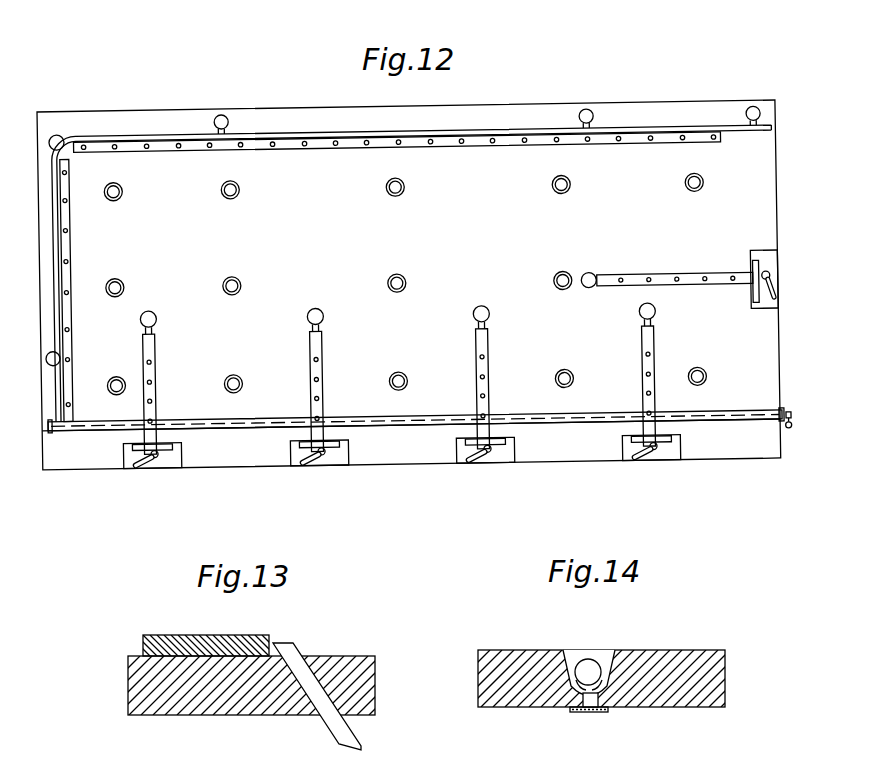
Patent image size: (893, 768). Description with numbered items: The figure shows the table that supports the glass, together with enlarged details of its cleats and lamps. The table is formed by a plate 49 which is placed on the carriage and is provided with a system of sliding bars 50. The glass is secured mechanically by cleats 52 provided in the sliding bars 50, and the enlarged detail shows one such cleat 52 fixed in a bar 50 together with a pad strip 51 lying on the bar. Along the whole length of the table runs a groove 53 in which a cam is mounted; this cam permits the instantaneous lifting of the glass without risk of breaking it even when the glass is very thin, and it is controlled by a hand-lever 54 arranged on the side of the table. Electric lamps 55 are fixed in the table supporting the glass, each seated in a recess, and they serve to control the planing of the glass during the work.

In FIG. 12, the plate 49 is at (83, 443).
In FIG. 12, the sliding bars 50 is at (308, 433).
In FIG. 13, the sliding bars 50 is at (203, 697).
In FIG. 13, the pad strip 51 is at (160, 638).
In FIG. 13, the cleats 52 is at (338, 723).
In FIG. 12, the groove 53 is at (725, 423).
In FIG. 12, the hand-lever 54 is at (788, 432).
In FIG. 12, the electric lamps 55 is at (397, 378).
In FIG. 14, the electric lamps 55 is at (590, 667).